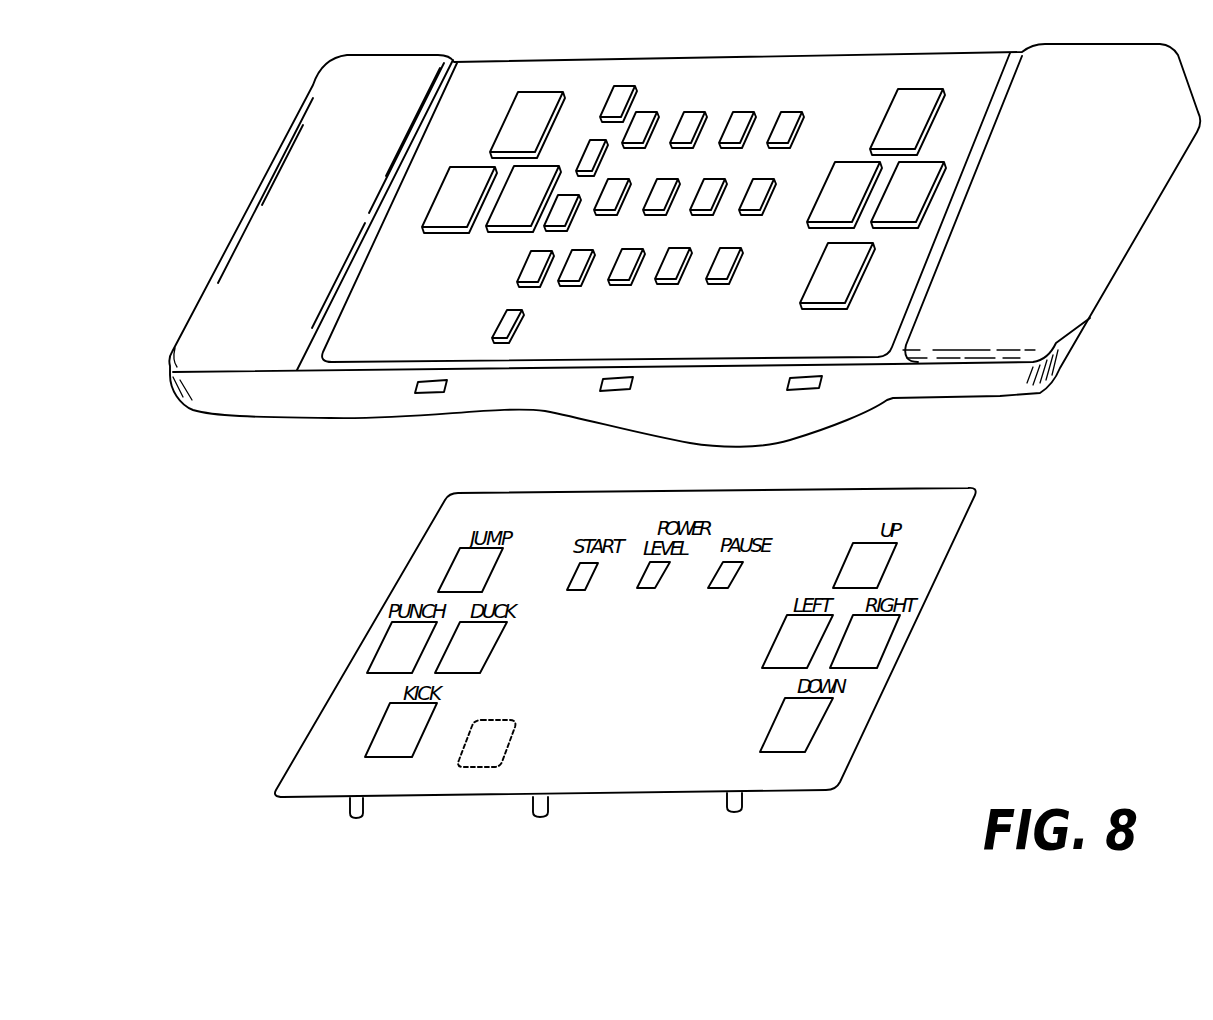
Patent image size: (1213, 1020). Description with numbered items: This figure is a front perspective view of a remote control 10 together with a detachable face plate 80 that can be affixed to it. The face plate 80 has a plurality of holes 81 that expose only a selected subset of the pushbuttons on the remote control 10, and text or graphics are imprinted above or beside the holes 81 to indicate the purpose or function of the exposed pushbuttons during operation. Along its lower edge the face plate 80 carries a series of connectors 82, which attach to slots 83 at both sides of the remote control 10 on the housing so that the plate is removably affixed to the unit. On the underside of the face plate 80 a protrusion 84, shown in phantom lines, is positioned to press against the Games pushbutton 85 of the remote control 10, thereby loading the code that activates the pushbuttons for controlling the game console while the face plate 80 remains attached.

The remote control 10 is at (1050, 302).
The removable face plate 80 is at (690, 770).
The hole 81 is at (873, 643).
The connector 82 is at (547, 803).
The slot 83 is at (820, 384).
The protrusion 84 is at (477, 757).
The Games pushbutton 85 is at (505, 324).